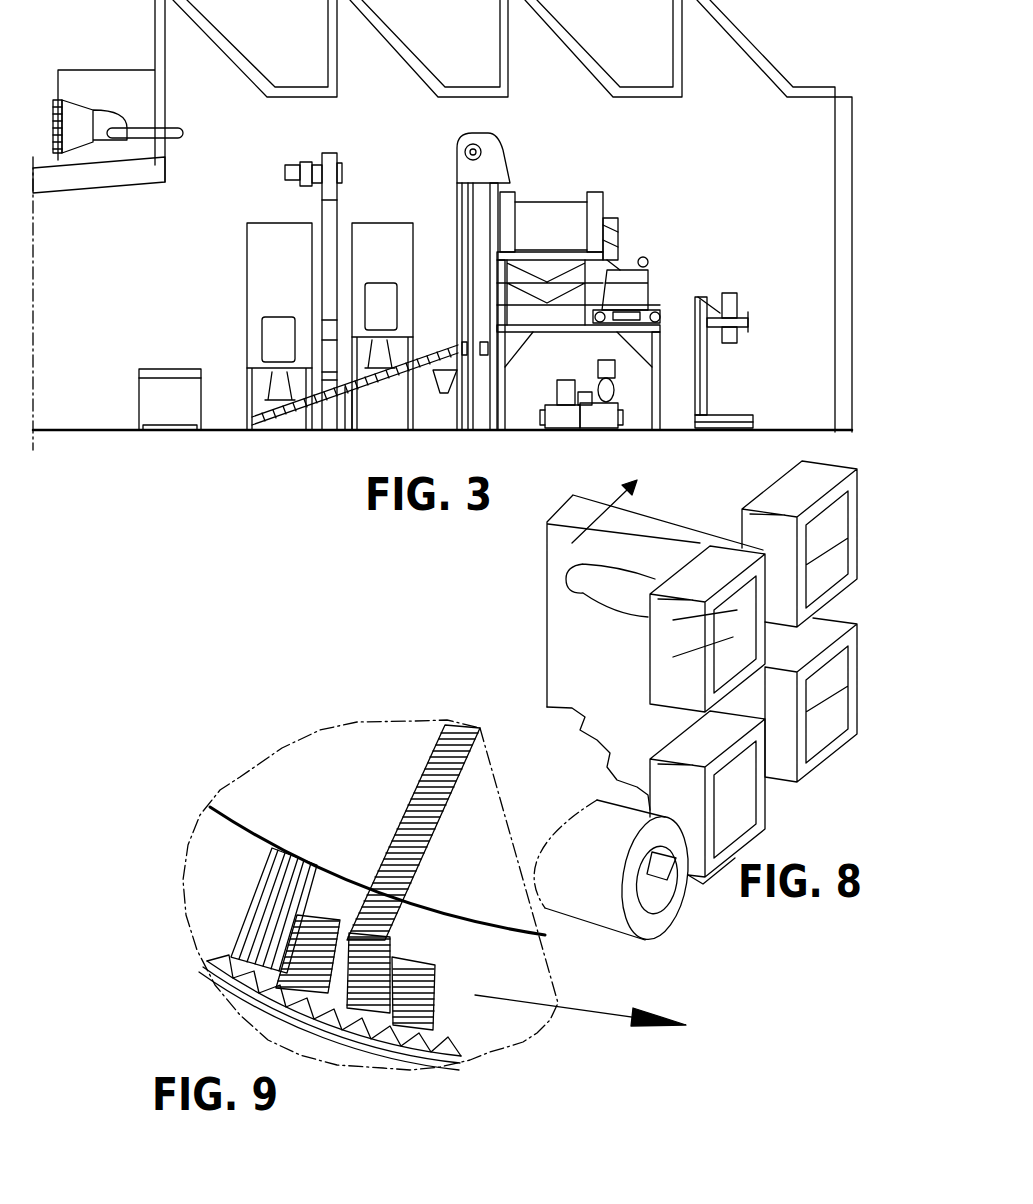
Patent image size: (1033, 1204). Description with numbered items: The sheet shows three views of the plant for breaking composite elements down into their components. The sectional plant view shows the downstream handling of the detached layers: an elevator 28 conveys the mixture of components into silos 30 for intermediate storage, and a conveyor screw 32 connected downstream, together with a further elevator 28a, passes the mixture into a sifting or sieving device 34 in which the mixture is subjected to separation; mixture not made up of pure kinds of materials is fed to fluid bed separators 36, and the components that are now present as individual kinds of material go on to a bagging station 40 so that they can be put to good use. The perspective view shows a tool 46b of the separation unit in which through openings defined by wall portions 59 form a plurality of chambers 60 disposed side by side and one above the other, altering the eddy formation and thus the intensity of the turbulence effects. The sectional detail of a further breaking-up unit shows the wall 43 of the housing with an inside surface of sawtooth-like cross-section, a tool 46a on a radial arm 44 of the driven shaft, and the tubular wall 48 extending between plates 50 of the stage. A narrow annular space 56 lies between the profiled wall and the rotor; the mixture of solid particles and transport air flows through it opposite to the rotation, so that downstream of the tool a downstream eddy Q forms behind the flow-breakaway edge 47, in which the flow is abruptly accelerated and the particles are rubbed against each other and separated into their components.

In FIG. 3, the elevator 28 is at (330, 217).
In FIG. 3, the further elevator 28a is at (497, 138).
In FIG. 3, the silos 30 is at (377, 420).
In FIG. 3, the conveyor screw 32 is at (260, 430).
In FIG. 3, the sifting or sieving device 34 is at (553, 207).
In FIG. 3, the fluid bed separators 36 is at (630, 297).
In FIG. 3, the bagging station 40 is at (707, 375).
In FIG. 9, the wall 43 is at (390, 1063).
In FIG. 9, the radial arms 44 is at (412, 802).
In FIG. 9, the tool 46a is at (428, 940).
In FIG. 8, the tool 46b is at (520, 617).
In FIG. 8, the flow-breakaway edge 47 is at (703, 884).
In FIG. 9, the flow-breakaway edge 47 is at (217, 973).
In FIG. 9, the tubular wall 48 is at (478, 925).
In FIG. 9, the plates 50 is at (337, 776).
In FIG. 9, the annular space 56 is at (503, 1015).
In FIG. 8, the wall portions 59 is at (758, 530).
In FIG. 8, the chambers 60 is at (817, 560).
In FIG. 9, the chambers 60 is at (328, 900).
In FIG. 8, the downstream eddy Q is at (650, 928).
In FIG. 9, the downstream eddy Q is at (300, 873).